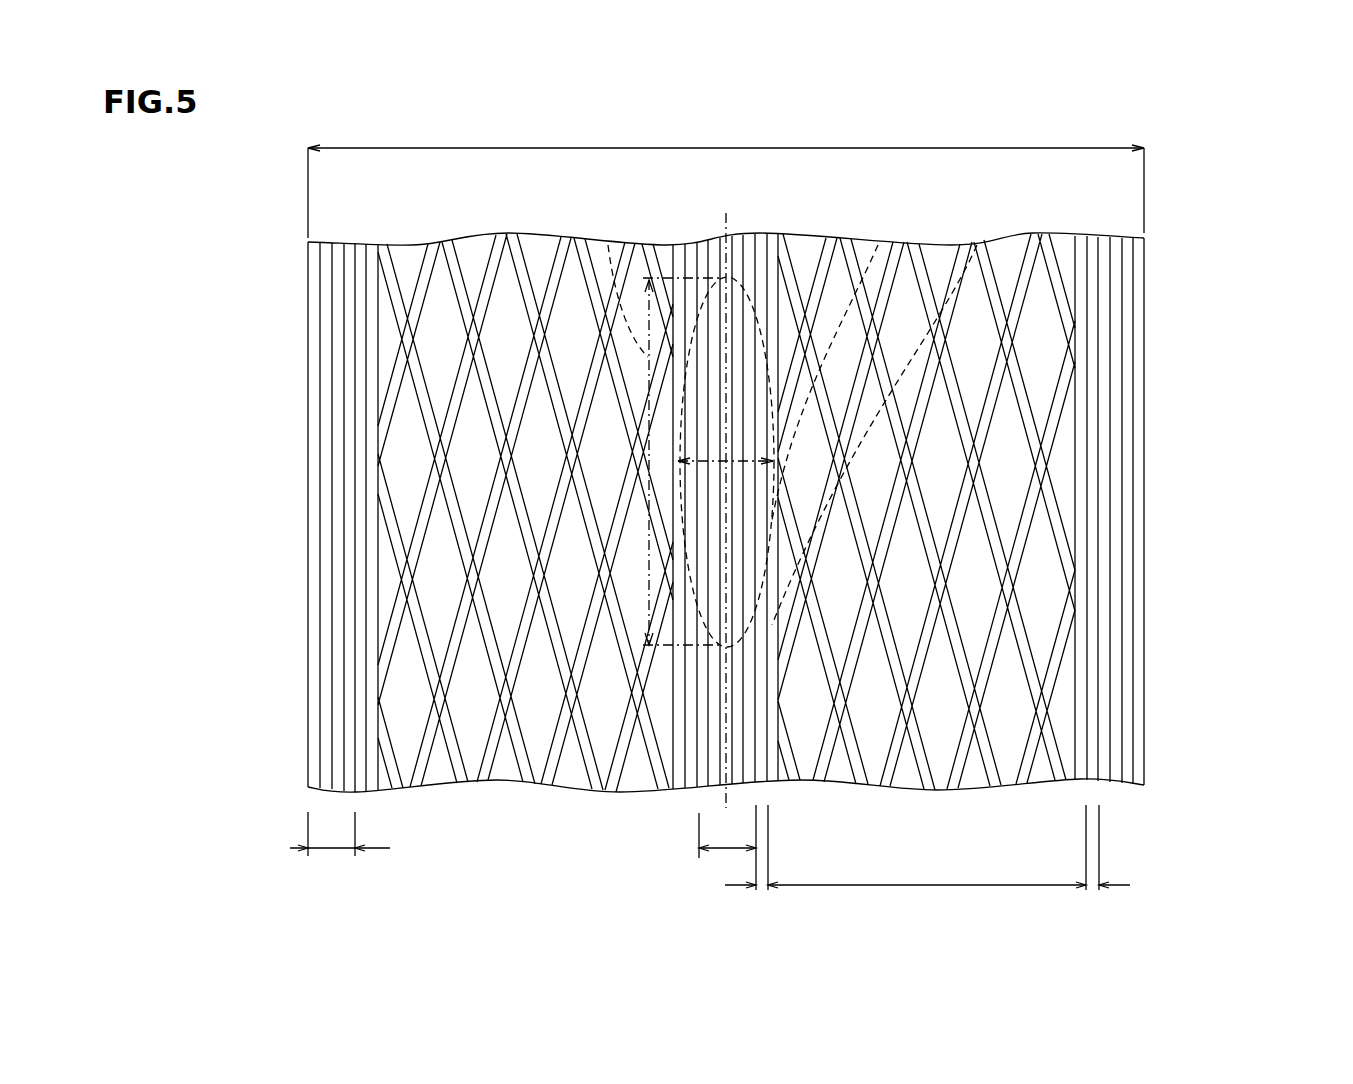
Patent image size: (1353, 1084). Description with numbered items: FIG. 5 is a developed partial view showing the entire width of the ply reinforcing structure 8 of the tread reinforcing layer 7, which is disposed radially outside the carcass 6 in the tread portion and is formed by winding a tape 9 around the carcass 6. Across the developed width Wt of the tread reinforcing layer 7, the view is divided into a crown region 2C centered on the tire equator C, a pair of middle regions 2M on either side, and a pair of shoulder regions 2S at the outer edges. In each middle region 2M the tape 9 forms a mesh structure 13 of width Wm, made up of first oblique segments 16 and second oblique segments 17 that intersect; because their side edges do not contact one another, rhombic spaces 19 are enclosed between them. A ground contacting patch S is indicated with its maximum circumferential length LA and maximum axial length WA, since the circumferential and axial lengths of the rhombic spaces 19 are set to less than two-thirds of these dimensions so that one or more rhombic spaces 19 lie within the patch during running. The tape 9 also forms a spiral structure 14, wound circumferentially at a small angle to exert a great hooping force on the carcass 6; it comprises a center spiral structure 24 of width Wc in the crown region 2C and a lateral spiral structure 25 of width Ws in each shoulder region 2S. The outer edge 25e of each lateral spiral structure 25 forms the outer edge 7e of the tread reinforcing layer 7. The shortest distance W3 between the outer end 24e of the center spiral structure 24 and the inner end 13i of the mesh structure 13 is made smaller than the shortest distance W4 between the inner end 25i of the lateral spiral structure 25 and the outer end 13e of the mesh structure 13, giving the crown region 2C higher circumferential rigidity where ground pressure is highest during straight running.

The shoulder region 2S is at (346, 220).
The middle region 2M is at (536, 220).
The crown region 2C is at (748, 215).
The carcass 6 is at (285, 514).
The tread reinforcing layer 7 is at (1178, 225).
The ply reinforcing structure 8 is at (1232, 171).
The tape 9 is at (752, 245).
The mesh structure 13 is at (505, 790).
The inner end of the mesh structure 13i is at (694, 248).
The outer end of the mesh structure 13e is at (1090, 705).
The spiral structure 14 is at (357, 797).
The first oblique segments 16 is at (1020, 278).
The second oblique segments 17 is at (1052, 498).
The rhombic spaces 19 is at (1008, 462).
The center spiral structure 24 is at (685, 802).
The outer end of the center spiral structure 24e is at (700, 673).
The lateral spiral structure 25 is at (815, 892).
The outer edge of the lateral spiral structure 25e is at (725, 756).
The inner end of the lateral spiral structure 25i is at (1097, 753).
The outer edge of the tread reinforcing layer 7e is at (308, 757).
The tire equator C is at (708, 499).
The developed width of the tread reinforcing layer Wt is at (726, 179).
The width of the lateral spiral structure Ws is at (340, 846).
The width of the center spiral structure Wc is at (727, 847).
The shortest distance between the center spiral structure and the mesh structure W3 is at (757, 861).
The width of the mesh structure Wm is at (938, 861).
The shortest distance between the mesh structure and the lateral spiral structure W4 is at (1102, 861).
The maximum circumferential length of the ground contacting patch LA is at (608, 240).
The maximum axial length of the ground contacting patch WA is at (878, 245).
The ground contacting patch S is at (977, 245).